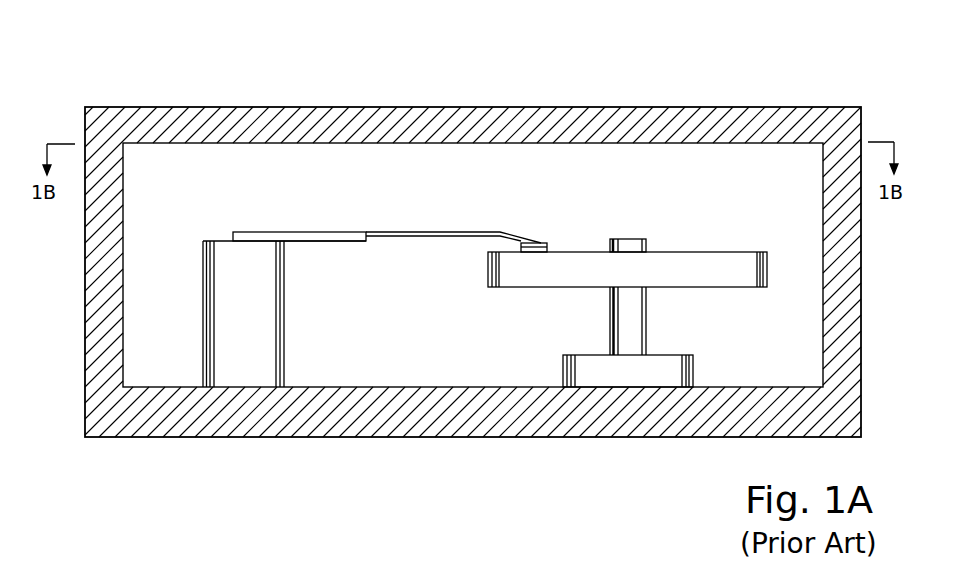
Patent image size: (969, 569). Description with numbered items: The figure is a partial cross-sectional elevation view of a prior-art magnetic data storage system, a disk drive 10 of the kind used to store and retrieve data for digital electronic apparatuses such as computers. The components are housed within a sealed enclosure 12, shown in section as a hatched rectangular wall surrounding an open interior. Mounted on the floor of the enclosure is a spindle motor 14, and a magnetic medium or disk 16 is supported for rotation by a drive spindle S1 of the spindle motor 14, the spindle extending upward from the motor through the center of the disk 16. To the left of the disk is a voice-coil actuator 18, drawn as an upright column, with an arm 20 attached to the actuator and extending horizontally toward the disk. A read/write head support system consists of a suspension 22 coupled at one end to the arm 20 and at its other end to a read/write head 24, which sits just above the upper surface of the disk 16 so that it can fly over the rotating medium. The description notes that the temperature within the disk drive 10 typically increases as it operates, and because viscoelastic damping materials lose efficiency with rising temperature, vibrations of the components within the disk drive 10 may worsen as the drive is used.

The disk drive 10 is at (806, 74).
The sealed enclosure 12 is at (457, 430).
The spindle motor 14 is at (628, 372).
The magnetic disk 16 is at (712, 260).
The voice-coil actuator 18 is at (268, 345).
The arm 20 is at (353, 232).
The suspension 22 is at (437, 234).
The read/write head 24 is at (540, 247).
The drive spindle S1 is at (632, 243).